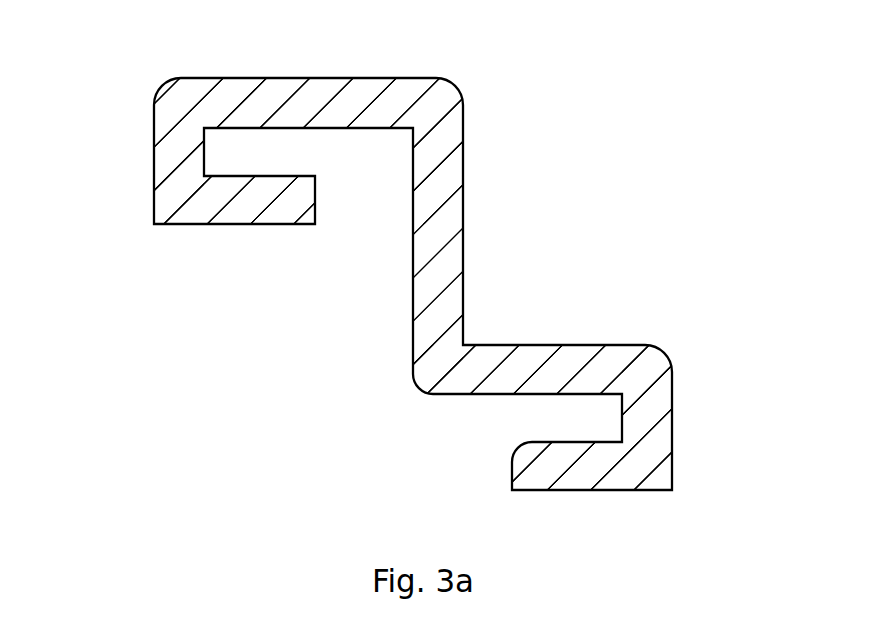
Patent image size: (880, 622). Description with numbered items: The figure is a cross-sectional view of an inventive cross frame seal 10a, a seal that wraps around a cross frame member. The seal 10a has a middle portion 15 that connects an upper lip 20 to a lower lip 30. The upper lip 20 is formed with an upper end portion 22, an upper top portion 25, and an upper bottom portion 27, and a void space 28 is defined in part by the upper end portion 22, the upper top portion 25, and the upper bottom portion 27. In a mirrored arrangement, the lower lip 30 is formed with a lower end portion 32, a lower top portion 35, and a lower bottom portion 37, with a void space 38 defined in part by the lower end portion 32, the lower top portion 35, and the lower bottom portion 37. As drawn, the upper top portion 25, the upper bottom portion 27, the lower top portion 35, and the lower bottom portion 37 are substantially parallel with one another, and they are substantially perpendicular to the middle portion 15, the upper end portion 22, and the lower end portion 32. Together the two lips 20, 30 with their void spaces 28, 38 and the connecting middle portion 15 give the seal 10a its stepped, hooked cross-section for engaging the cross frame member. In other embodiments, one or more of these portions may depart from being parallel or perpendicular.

The cross frame seal 10a is at (125, 268).
The upper lip 20 is at (389, 70).
The upper top portion 25 is at (319, 97).
The upper end portion 22 is at (173, 157).
The upper bottom portion 27 is at (248, 198).
The void space 28 is at (332, 172).
The middle portion 15 is at (476, 216).
The lower lip 30 is at (611, 330).
The lower top portion 35 is at (523, 360).
The void space 38 is at (502, 423).
The lower end portion 32 is at (645, 422).
The lower bottom portion 37 is at (592, 468).